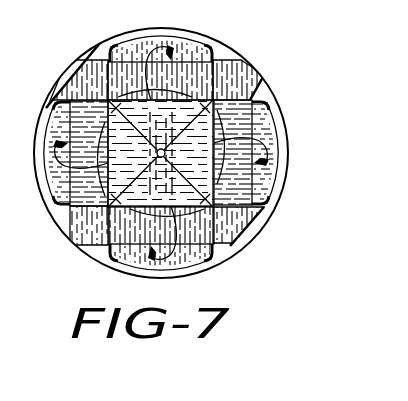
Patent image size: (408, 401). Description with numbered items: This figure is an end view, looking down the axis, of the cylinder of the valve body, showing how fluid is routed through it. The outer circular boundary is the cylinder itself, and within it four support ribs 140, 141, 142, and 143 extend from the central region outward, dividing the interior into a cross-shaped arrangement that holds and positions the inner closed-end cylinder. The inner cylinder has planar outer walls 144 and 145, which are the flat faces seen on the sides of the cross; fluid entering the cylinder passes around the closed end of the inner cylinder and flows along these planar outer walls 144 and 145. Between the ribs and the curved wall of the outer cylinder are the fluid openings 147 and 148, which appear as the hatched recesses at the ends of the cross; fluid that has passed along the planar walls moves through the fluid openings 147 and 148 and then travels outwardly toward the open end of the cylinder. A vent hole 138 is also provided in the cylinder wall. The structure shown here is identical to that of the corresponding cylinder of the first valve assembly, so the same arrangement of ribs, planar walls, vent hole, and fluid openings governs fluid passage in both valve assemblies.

The vent hole 138 is at (272, 111).
The support rib 140 is at (77, 40).
The support rib 141 is at (77, 243).
The support rib 142 is at (256, 237).
The support rib 143 is at (249, 62).
The planar outer wall 144 is at (55, 203).
The planar outer wall 145 is at (216, 263).
The fluid opening 147 is at (145, 260).
The fluid opening 148 is at (44, 120).